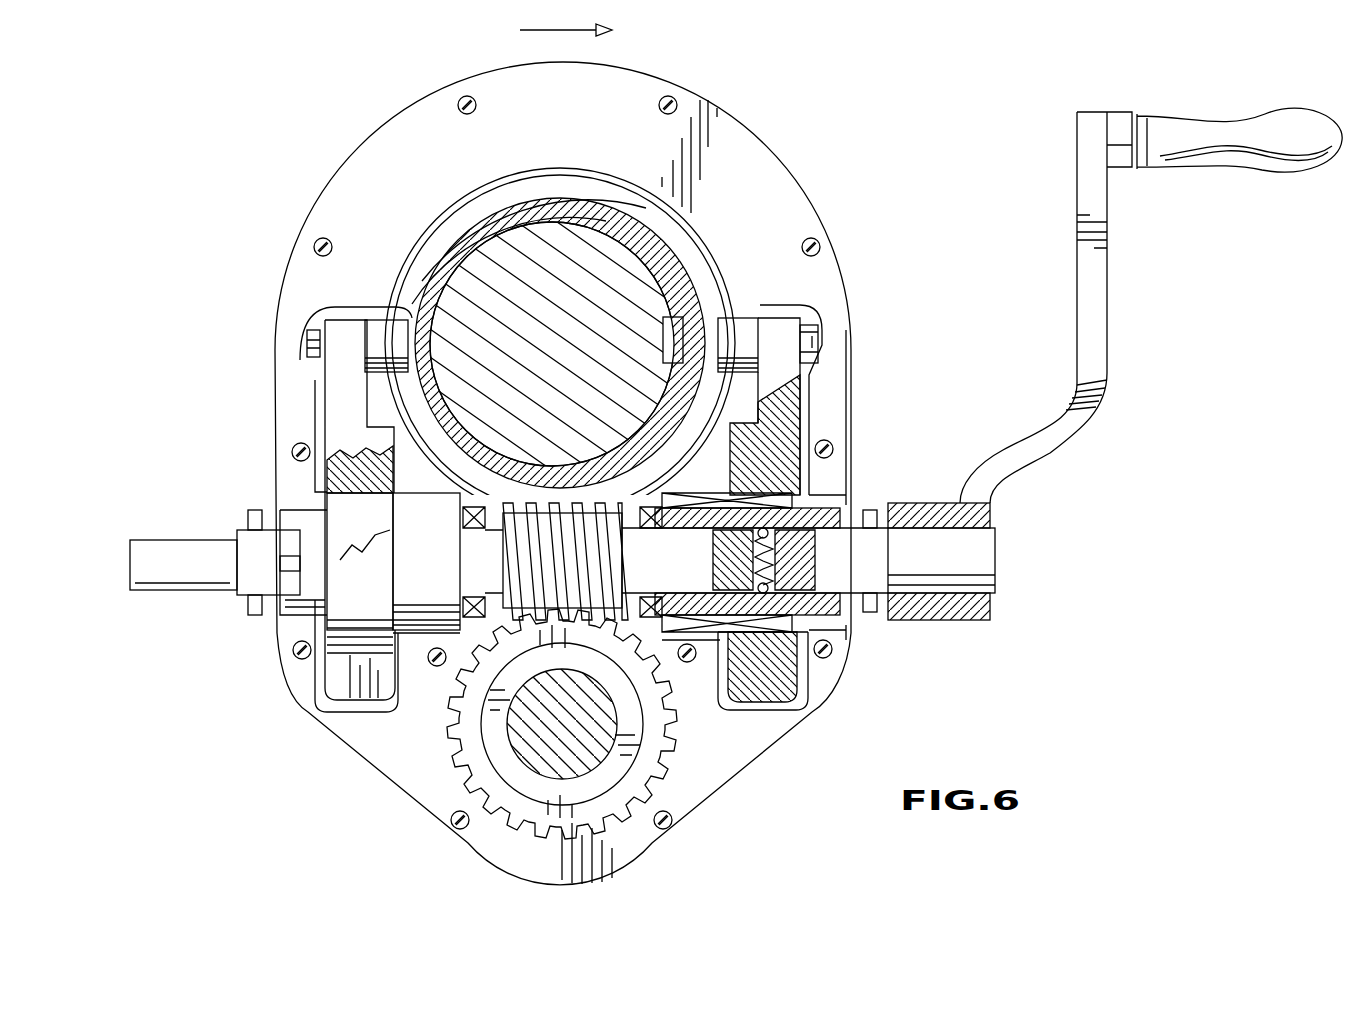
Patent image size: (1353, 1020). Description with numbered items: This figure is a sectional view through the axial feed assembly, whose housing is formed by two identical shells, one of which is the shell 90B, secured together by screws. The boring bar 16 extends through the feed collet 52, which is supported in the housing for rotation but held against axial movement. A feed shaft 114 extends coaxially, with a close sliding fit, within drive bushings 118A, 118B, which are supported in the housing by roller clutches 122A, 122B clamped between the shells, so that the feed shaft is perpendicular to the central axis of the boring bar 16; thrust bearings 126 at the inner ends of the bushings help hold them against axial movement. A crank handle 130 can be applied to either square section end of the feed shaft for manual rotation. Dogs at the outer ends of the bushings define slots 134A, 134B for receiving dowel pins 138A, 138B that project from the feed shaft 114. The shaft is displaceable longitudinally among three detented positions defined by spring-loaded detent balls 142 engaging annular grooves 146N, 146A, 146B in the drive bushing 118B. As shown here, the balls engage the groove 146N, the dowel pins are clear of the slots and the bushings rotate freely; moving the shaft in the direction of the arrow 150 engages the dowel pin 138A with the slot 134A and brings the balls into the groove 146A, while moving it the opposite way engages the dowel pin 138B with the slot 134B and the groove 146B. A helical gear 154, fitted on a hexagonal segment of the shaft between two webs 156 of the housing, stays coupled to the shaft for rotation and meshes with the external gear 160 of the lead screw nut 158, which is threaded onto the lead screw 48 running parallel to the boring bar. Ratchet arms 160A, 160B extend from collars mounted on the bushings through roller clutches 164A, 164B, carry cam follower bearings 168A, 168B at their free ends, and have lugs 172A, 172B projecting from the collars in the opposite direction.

The arrow 150 is at (566, 18).
The shell 90B is at (730, 120).
The boring bar 16 is at (522, 245).
The feed collet 52 is at (618, 218).
The cam follower bearing 168A is at (387, 318).
The cam follower bearing 168B is at (738, 318).
The ratchet arm 160A is at (337, 398).
The ratchet arm 160B is at (790, 418).
The roller clutch 164A is at (340, 520).
The roller clutch 164B is at (773, 690).
The lug 172A is at (345, 697).
The lug 172B is at (742, 703).
The roller clutch 122A is at (418, 633).
The roller clutch 122B is at (700, 632).
The drive bushing 118A is at (298, 615).
The drive bushing 118B is at (822, 510).
The slot 134A is at (290, 565).
The slot 134B is at (833, 617).
The feed shaft 114 is at (240, 595).
The dowel pin 138A is at (248, 518).
The dowel pin 138B is at (870, 622).
The thrust bearing 126 is at (473, 538).
The helical gear 154 is at (480, 568).
The web 156 is at (497, 493).
The annular groove 146N is at (757, 505).
The annular groove 146B is at (712, 580).
The annular groove 146A is at (800, 632).
The detent ball 142 is at (796, 556).
The crank handle 130 is at (1095, 429).
The lead screw nut 158 is at (617, 763).
The external gear 160 is at (457, 787).
The lead screw 48 is at (550, 757).